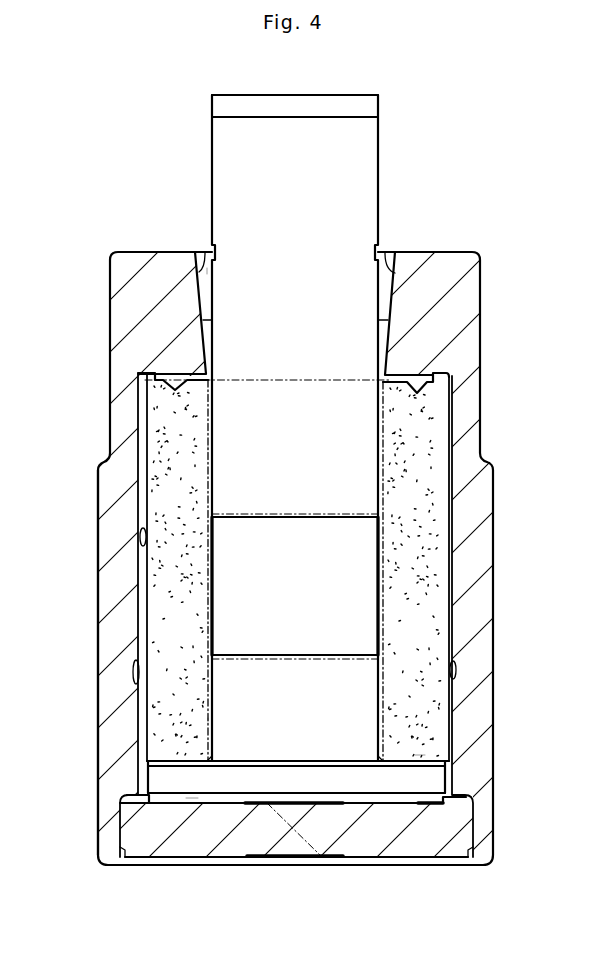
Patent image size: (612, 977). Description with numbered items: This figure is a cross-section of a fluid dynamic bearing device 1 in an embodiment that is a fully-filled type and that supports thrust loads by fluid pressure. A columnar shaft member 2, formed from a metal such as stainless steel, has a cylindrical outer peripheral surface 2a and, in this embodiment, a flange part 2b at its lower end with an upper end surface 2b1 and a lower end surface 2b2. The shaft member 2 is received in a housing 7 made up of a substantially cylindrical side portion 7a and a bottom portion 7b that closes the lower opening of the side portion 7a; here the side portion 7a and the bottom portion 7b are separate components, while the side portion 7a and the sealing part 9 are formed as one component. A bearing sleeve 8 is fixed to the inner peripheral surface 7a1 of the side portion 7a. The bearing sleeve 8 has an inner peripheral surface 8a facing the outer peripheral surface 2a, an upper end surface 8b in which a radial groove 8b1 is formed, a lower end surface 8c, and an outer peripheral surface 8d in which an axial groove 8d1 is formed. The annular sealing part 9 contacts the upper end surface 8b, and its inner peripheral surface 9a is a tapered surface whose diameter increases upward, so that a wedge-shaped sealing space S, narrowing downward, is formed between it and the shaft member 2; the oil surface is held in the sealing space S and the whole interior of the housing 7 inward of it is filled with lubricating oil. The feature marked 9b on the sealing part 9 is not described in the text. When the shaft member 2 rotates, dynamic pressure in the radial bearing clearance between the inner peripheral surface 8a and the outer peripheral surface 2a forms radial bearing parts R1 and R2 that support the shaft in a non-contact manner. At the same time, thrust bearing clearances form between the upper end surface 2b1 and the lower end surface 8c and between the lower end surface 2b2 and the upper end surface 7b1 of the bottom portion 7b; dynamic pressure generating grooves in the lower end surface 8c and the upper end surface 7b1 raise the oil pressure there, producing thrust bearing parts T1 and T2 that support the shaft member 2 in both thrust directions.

The fluid dynamic bearing device 1 is at (482, 130).
The shaft member 2 is at (383, 145).
The outer peripheral surface 2a is at (385, 432).
The flange part 2b is at (432, 786).
The upper end surface 2b1 is at (428, 762).
The lower end surface 2b2 is at (442, 810).
The housing 7 is at (96, 528).
The side portion 7a is at (110, 657).
The inner peripheral surface 7a1 is at (140, 570).
The bottom portion 7b is at (287, 836).
The upper end surface 7b1 is at (374, 805).
The bearing sleeve 8 is at (380, 462).
The inner peripheral surface 8a is at (380, 480).
The upper end surface 8b is at (165, 378).
The radial groove 8b1 is at (440, 378).
The lower end surface 8c is at (150, 780).
The outer peripheral surface 8d is at (455, 616).
The axial groove 8d1 is at (147, 620).
The sealing part 9 is at (430, 322).
The inner peripheral surface 9a is at (388, 256).
The cap lower surface 9b is at (440, 397).
The sealing space S is at (205, 270).
The radial bearing part R1 is at (205, 448).
The radial bearing part R2 is at (205, 720).
The thrust bearing part T1 is at (422, 748).
The thrust bearing part T2 is at (192, 802).